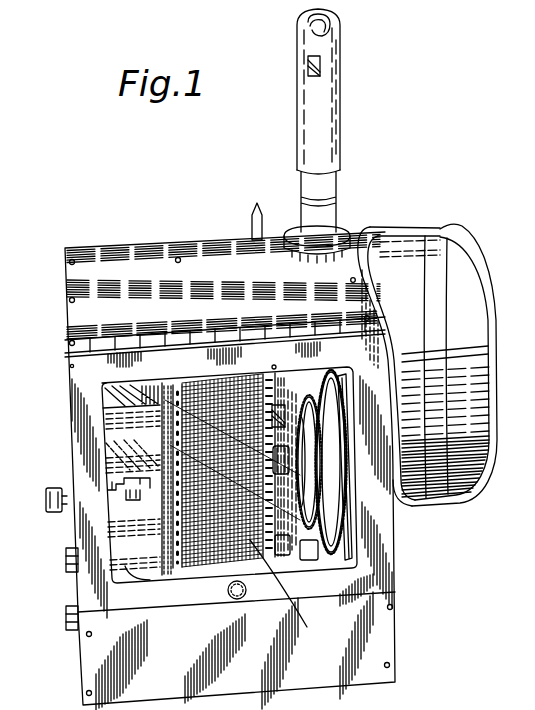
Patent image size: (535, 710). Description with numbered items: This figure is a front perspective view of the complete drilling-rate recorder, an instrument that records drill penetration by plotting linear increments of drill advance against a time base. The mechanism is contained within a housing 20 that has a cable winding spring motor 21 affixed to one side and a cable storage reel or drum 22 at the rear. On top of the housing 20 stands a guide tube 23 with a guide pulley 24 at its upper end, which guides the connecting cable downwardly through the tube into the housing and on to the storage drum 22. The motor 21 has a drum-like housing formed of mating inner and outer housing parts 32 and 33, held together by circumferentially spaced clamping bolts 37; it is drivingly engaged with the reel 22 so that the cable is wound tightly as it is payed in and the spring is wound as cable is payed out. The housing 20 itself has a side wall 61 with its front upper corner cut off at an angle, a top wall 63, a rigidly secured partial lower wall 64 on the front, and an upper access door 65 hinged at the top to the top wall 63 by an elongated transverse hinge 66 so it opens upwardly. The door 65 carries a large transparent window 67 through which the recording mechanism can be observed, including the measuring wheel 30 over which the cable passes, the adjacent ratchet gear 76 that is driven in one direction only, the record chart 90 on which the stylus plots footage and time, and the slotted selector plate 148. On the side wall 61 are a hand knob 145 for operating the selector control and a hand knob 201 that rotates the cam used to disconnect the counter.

The housing 20 is at (130, 265).
The cable winding spring motor 21 is at (467, 280).
The cable storage reel or drum 22 is at (255, 212).
The guide tube 23 is at (330, 112).
The guide pulley 24 is at (302, 42).
The rotatable wheel 30 is at (355, 520).
The inner housing part 32 is at (401, 262).
The outer housing part 33 is at (465, 315).
The clamping bolts 37 is at (462, 352).
The side wall 61 is at (77, 587).
The top wall 63 is at (153, 262).
The partial lower wall 64 is at (380, 637).
The upper access door 65 is at (380, 568).
The elongated transverse hinge 66 is at (233, 352).
The transparent window 67 is at (130, 566).
The ratchet gear 76 is at (323, 477).
The chart 90 is at (287, 592).
The hand knob 145 is at (56, 514).
The selector plate 148 is at (120, 449).
The hand knob 201 is at (70, 627).